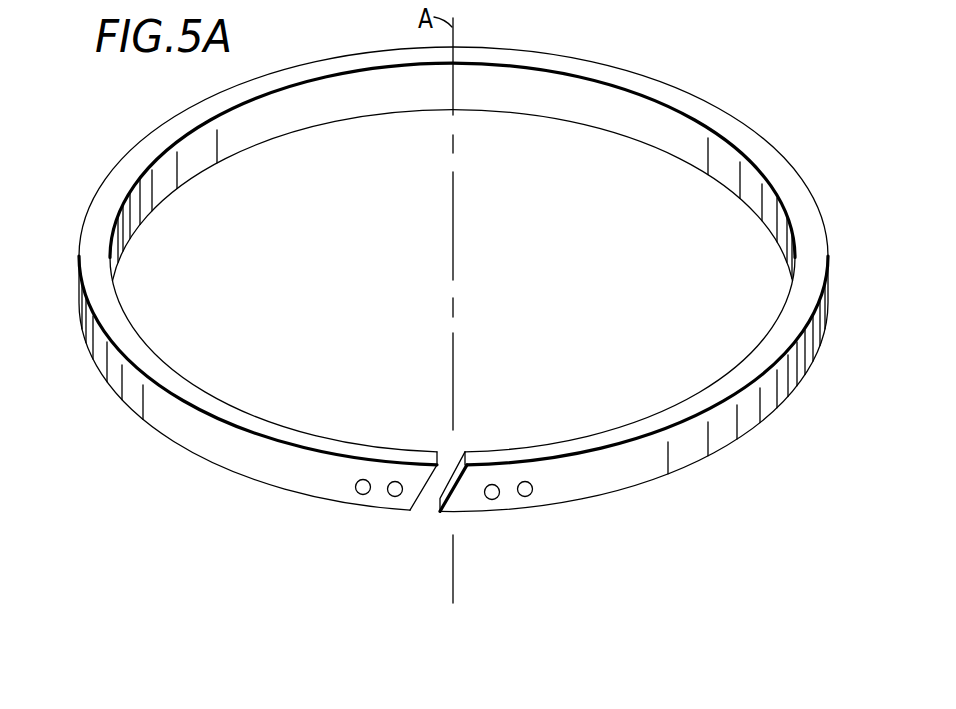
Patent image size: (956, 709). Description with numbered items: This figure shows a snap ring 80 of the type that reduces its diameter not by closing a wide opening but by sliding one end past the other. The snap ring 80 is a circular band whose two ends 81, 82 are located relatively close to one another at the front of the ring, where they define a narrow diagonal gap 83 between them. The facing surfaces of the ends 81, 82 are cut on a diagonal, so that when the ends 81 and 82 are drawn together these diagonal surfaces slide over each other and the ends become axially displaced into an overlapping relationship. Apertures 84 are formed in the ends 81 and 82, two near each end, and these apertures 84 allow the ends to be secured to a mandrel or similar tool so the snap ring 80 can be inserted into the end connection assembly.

The snap ring 80 is at (773, 97).
The end of snap ring 81 is at (463, 505).
The end of snap ring 82 is at (407, 508).
The diagonal gap 83 is at (449, 455).
The apertures 84 is at (397, 482).